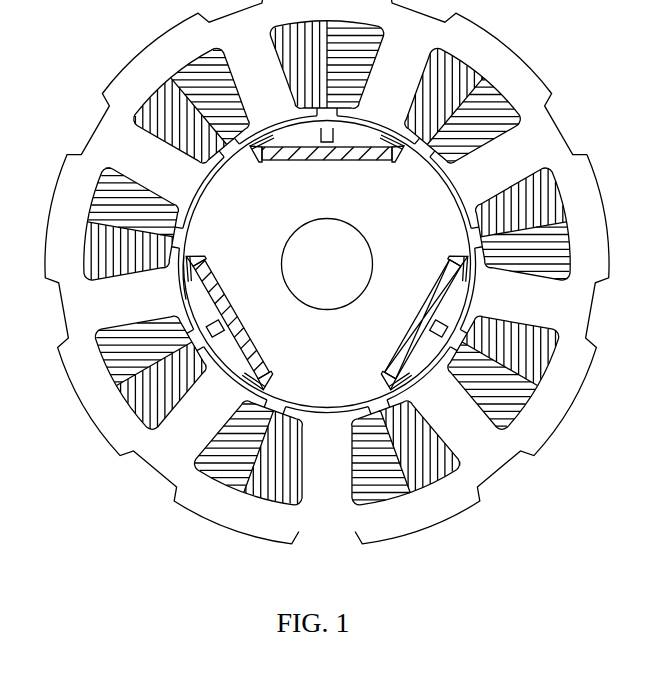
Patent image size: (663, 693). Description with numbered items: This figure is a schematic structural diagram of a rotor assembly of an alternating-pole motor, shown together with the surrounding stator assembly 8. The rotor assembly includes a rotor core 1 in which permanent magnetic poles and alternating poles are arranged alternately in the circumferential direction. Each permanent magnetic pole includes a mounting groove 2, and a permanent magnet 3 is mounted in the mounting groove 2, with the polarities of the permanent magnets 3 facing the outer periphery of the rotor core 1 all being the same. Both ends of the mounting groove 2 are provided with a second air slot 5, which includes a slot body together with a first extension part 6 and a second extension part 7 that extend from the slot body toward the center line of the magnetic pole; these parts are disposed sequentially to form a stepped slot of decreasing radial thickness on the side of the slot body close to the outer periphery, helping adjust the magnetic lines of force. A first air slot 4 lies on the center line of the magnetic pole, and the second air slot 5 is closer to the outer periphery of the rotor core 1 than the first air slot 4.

The rotor core 1 is at (331, 383).
The mounting groove 2 is at (243, 358).
The permanent magnet 3 is at (238, 372).
The first air slot 4 is at (217, 332).
The second air slot 5 is at (193, 253).
The first extension part 6 is at (185, 277).
The second extension part 7 is at (185, 292).
The stator assembly 8 is at (122, 150).